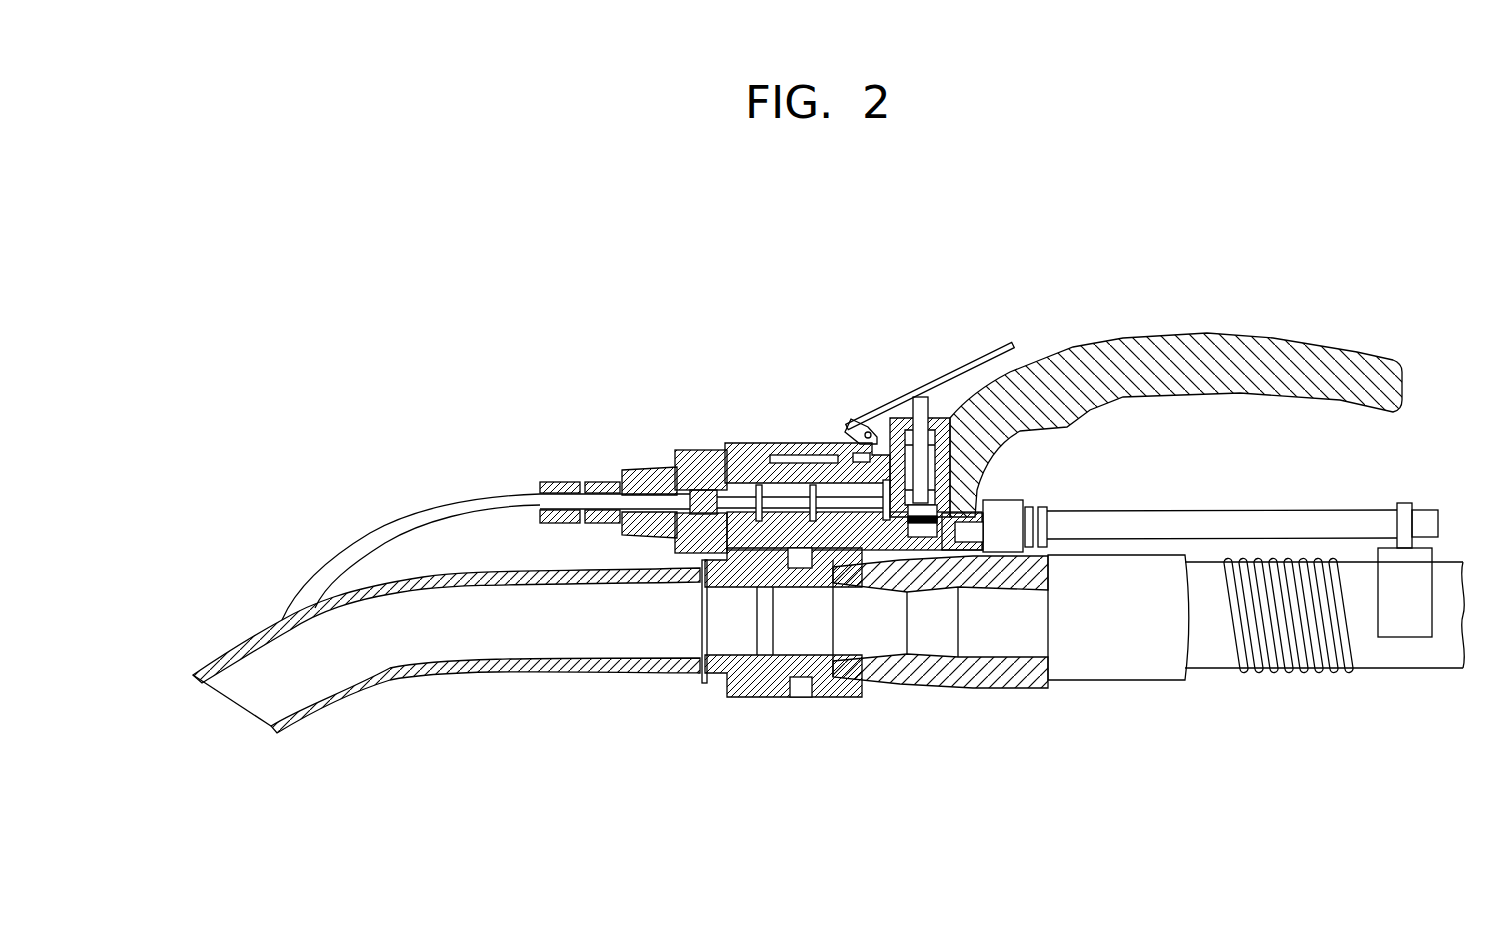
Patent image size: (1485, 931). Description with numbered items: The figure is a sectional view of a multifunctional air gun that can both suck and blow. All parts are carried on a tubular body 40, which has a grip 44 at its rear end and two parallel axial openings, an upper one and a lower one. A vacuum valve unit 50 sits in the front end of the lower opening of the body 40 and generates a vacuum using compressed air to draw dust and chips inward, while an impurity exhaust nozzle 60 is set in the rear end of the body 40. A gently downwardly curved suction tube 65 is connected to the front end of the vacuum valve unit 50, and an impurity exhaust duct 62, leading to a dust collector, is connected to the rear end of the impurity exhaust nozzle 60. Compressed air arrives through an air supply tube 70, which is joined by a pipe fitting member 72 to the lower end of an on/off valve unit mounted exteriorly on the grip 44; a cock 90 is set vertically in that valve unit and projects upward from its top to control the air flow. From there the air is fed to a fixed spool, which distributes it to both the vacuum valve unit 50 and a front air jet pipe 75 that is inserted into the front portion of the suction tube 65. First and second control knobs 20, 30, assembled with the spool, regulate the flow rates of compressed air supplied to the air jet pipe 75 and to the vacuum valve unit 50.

The first control knob 20 is at (693, 448).
The second control knob 30 is at (627, 468).
The tubular body 40 is at (772, 441).
The grip 44 is at (1253, 345).
The vacuum valve unit 50 is at (713, 680).
The impurity exhaust nozzle 60 is at (932, 672).
The impurity exhaust duct 62 is at (1385, 655).
The suction tube 65 is at (383, 663).
The air supply tube 70 is at (1222, 522).
The pipe fitting member 72 is at (1008, 508).
The air jet pipe 75 is at (383, 528).
The cock 90 is at (913, 416).